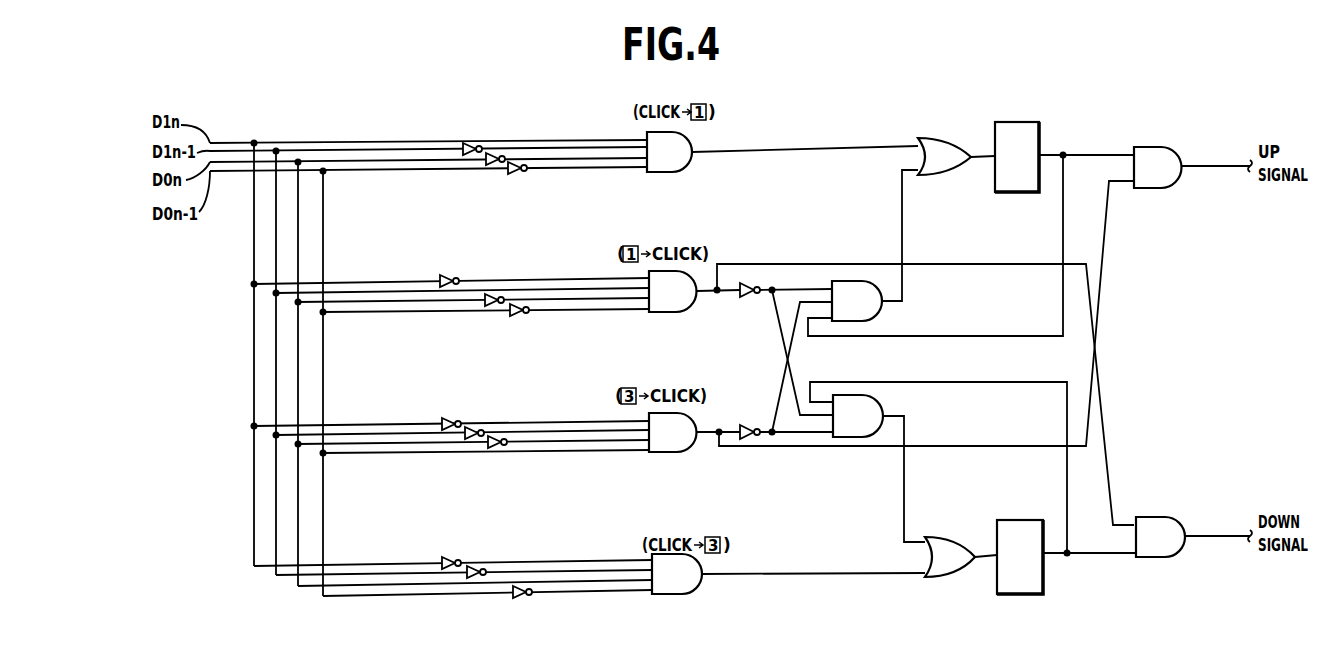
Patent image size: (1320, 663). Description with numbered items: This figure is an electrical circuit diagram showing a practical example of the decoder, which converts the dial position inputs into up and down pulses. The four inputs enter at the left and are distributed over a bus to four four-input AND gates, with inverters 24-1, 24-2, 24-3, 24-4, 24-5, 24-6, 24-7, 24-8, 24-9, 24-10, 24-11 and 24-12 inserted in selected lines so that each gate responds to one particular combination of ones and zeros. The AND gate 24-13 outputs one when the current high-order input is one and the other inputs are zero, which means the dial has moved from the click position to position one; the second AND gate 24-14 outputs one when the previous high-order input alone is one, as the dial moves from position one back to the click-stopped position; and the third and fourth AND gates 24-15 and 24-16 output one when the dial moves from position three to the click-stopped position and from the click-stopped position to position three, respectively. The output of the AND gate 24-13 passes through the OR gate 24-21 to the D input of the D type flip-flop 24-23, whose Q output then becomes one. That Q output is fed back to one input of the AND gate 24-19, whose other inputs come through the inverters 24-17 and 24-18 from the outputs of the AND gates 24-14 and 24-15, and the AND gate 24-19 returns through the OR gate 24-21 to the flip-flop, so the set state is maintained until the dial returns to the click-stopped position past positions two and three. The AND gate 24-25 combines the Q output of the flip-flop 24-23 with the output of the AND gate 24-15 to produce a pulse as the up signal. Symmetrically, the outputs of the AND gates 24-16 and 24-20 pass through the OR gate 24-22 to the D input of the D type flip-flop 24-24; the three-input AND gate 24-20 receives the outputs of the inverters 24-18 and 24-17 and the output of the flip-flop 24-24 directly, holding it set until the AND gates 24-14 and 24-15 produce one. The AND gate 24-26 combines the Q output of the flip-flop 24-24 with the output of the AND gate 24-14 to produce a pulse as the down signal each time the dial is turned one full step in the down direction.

The inverter 24-1 is at (472, 143).
The inverter 24-2 is at (496, 152).
The inverter 24-3 is at (517, 161).
The inverter 24-4 is at (447, 275).
The inverter 24-5 is at (492, 293).
The inverter 24-6 is at (518, 303).
The inverter 24-7 is at (449, 418).
The inverter 24-8 is at (472, 427).
The inverter 24-9 is at (496, 436).
The inverter 24-10 is at (455, 544).
The inverter 24-11 is at (474, 566).
The inverter 24-12 is at (520, 586).
The AND gate 24-13 is at (690, 170).
The second AND gate 24-14 is at (670, 312).
The third AND gate 24-15 is at (688, 452).
The fourth AND gate 24-16 is at (694, 594).
The inverter 24-17 is at (749, 298).
The inverter 24-18 is at (748, 425).
The AND gate 24-19 is at (880, 314).
The AND gate 24-20 is at (880, 410).
The OR gate 24-21 is at (944, 175).
The OR gate 24-22 is at (942, 577).
The D type flip-flop 24-23 is at (1016, 122).
The D type flip-flop 24-24 is at (1030, 594).
The AND gate 24-25 is at (1155, 147).
The AND gate 24-26 is at (1158, 517).